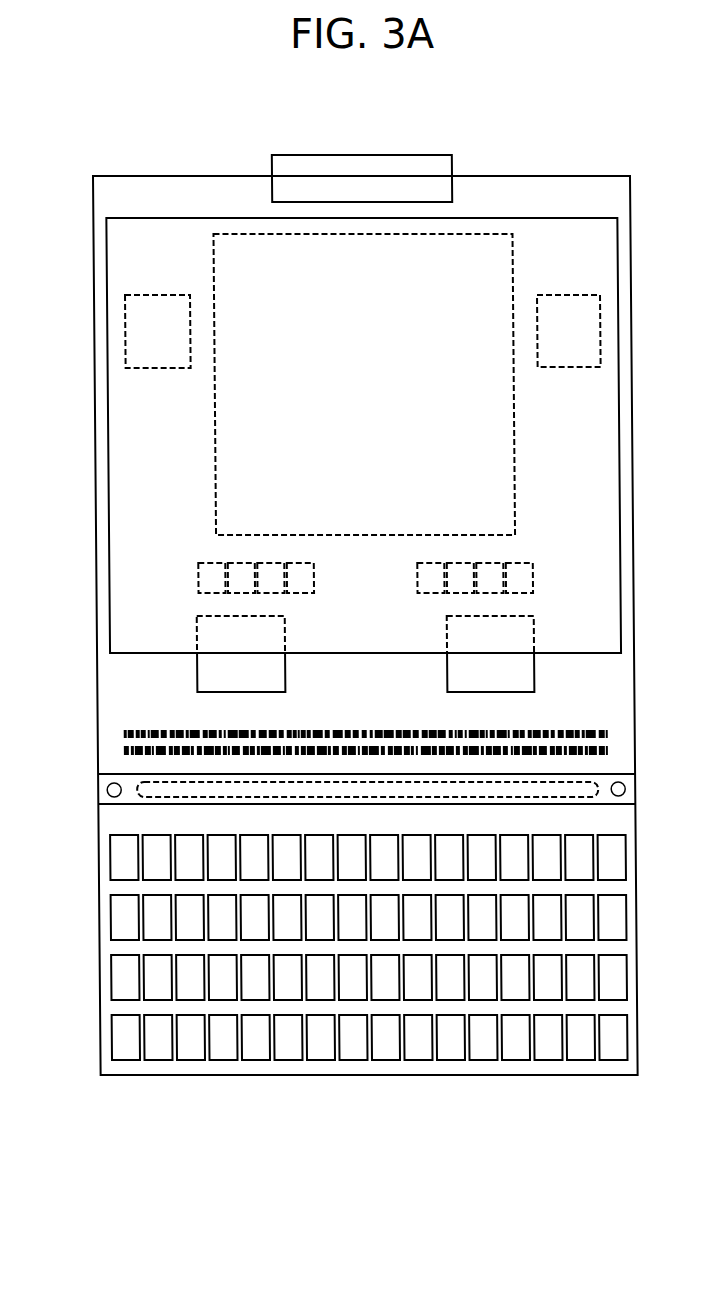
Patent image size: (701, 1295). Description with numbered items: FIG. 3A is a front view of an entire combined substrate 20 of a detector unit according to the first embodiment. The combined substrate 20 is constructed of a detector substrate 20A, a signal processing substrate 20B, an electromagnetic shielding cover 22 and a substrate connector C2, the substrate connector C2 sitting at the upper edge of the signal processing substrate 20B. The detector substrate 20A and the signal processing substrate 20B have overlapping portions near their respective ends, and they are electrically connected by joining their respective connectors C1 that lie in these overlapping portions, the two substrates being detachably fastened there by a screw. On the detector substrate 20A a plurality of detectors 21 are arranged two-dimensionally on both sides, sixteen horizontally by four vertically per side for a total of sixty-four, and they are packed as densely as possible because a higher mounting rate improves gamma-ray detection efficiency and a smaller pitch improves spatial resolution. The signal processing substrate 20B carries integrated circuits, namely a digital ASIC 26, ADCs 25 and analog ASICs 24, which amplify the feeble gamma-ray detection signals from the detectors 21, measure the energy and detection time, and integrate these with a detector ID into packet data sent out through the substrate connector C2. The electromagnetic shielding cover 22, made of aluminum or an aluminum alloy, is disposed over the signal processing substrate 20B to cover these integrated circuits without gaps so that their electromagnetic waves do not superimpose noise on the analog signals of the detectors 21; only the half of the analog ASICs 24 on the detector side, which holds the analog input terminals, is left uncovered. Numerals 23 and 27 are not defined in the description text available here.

The combined substrate 20 is at (209, 161).
The detector substrate 20A is at (569, 1078).
The signal processing substrate 20B is at (553, 189).
The detectors 21 is at (114, 855).
The electromagnetic shielding cover 22 is at (640, 274).
The board region 23 is at (617, 378).
The analog ASICs 24 is at (194, 678).
The ADCs 25 is at (194, 575).
The digital ASIC 26 is at (341, 399).
The connector region 27 is at (642, 805).
The connectors C1 is at (141, 790).
The substrate connector C2 is at (368, 170).